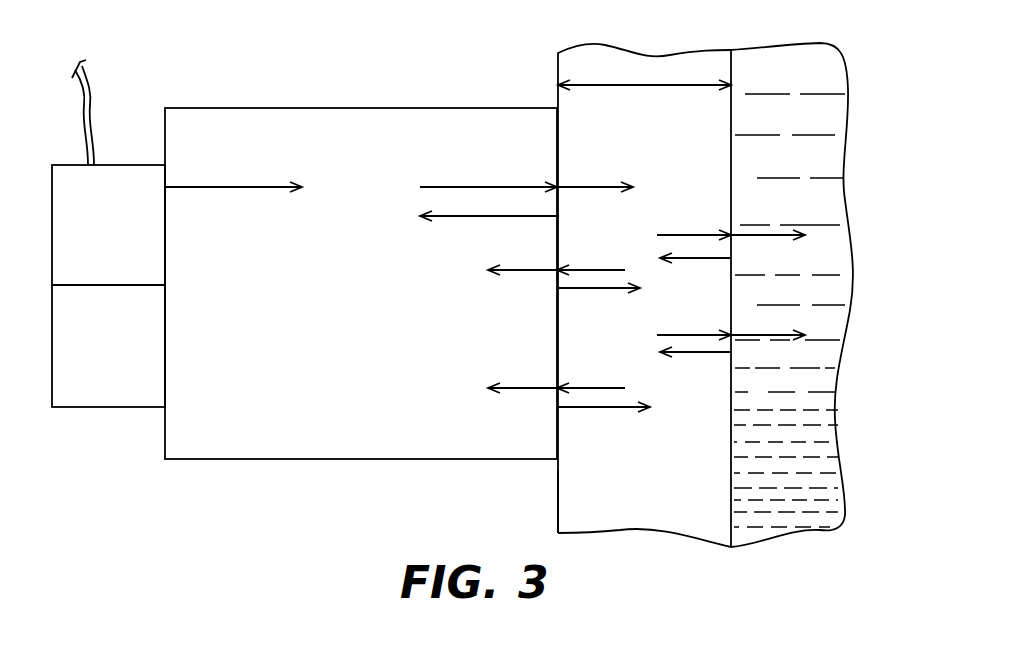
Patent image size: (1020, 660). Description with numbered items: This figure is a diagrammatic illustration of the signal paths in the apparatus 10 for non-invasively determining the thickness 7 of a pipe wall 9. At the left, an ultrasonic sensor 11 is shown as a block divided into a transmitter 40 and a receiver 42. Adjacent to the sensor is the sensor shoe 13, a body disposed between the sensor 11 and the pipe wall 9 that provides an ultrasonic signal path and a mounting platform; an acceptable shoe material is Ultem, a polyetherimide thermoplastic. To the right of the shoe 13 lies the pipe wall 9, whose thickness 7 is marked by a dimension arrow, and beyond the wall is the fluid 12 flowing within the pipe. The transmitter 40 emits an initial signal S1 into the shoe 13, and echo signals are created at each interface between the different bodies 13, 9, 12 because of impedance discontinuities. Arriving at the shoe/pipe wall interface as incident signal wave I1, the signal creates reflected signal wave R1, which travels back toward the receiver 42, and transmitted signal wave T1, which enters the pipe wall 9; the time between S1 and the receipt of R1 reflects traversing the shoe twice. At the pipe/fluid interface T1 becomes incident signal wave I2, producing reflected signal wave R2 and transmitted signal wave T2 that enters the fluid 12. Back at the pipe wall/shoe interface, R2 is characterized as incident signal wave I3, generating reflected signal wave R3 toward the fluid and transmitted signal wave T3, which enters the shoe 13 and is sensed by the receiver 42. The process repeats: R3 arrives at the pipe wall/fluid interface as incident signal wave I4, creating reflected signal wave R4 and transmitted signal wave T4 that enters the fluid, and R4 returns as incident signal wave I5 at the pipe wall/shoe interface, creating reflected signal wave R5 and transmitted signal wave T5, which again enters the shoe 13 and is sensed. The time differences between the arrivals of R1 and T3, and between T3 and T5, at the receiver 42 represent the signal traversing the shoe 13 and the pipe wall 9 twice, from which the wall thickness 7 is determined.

The apparatus 10 is at (242, 40).
The ultrasonic sensor 11 is at (115, 407).
The transmitter 40 is at (145, 165).
The receiver 42 is at (148, 407).
The sensor shoe 13 is at (352, 108).
The thickness 7 is at (624, 84).
The pipe wall 9 is at (557, 495).
The fluid 12 is at (799, 75).
The initial signal S1 is at (268, 186).
The incident signal wave I1 is at (492, 187).
The transmitted signal wave T1 is at (575, 187).
The reflected signal wave R1 is at (508, 216).
The incident signal wave I2 is at (710, 235).
The transmitted signal wave T2 is at (765, 235).
The reflected signal wave R2 is at (712, 258).
The incident signal wave I3 is at (585, 270).
The transmitted signal wave T3 is at (530, 270).
The reflected signal wave R3 is at (585, 288).
The incident signal wave I4 is at (715, 335).
The transmitted signal wave T4 is at (765, 335).
The reflected signal wave R4 is at (715, 352).
The incident signal wave I5 is at (585, 388).
The transmitted signal wave T5 is at (530, 388).
The reflected signal wave R5 is at (586, 407).